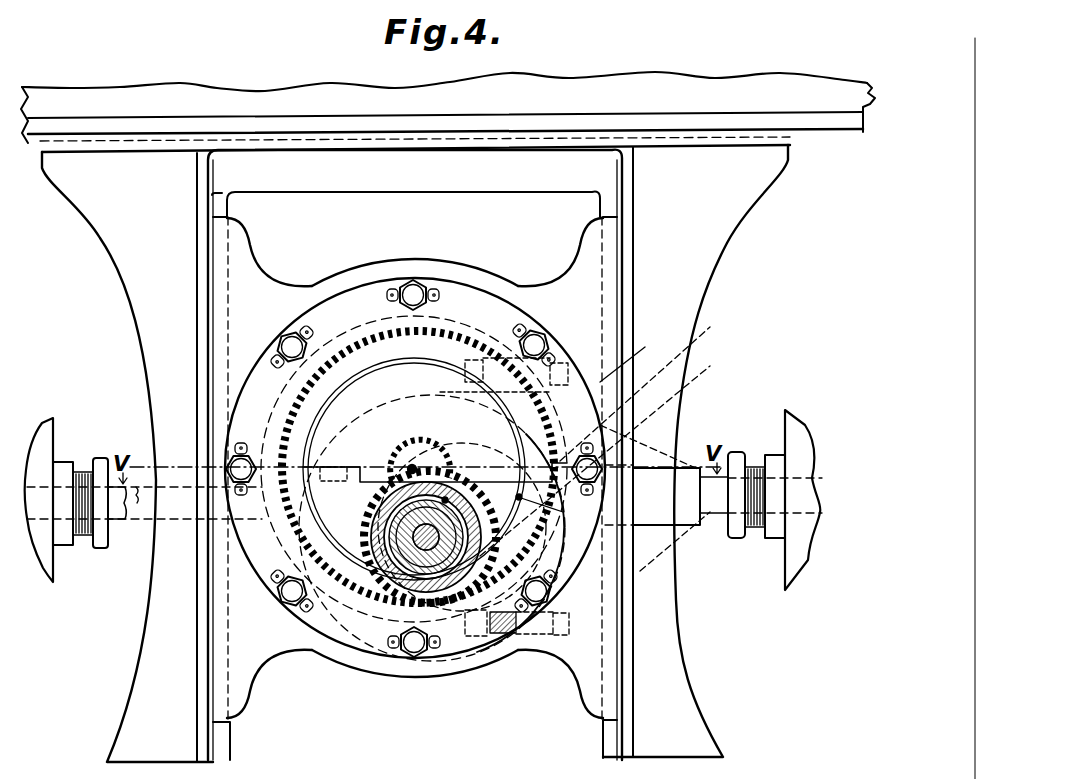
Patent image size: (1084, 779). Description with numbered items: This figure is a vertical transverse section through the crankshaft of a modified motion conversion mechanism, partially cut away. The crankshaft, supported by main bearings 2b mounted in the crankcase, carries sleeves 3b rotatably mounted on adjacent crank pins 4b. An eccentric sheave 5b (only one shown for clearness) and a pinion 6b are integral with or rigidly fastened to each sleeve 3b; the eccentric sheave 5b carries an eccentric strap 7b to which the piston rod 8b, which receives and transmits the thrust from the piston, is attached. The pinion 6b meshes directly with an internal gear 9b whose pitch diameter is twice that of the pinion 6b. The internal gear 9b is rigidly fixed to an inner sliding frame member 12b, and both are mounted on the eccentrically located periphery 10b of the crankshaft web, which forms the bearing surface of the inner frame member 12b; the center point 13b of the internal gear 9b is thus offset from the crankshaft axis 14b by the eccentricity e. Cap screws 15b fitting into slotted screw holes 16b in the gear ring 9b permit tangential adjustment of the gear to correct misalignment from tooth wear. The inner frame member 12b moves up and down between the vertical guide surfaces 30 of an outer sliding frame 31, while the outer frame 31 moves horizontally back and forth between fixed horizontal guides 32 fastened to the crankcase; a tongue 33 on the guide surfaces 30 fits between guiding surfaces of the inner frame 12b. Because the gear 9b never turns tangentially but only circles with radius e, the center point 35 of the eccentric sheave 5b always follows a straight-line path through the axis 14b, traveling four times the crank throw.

The fixed horizontal guides 32 is at (205, 128).
The outer sliding frame 31 is at (148, 271).
The vertical guide surfaces 30 is at (210, 641).
The tongue 33 is at (226, 248).
The inner sliding frame member 12b is at (322, 290).
The internal gear 9b is at (345, 330).
The periphery of the web or cheek 10b is at (434, 366).
The cap screws 15b is at (414, 290).
The slotted screw holes 16b is at (437, 297).
The pinion 6b is at (333, 620).
The main bearings 2b is at (366, 462).
The eccentric strap 7b is at (358, 436).
The eccentric sheave 5b is at (637, 353).
The crank pins 4b is at (535, 372).
The sleeves 3b is at (376, 573).
The axis of the crankshaft 14b is at (448, 458).
The center point of the internal gear 13b is at (410, 455).
The center point of the eccentric sheave 35 is at (554, 511).
The piston rod 8b is at (146, 512).